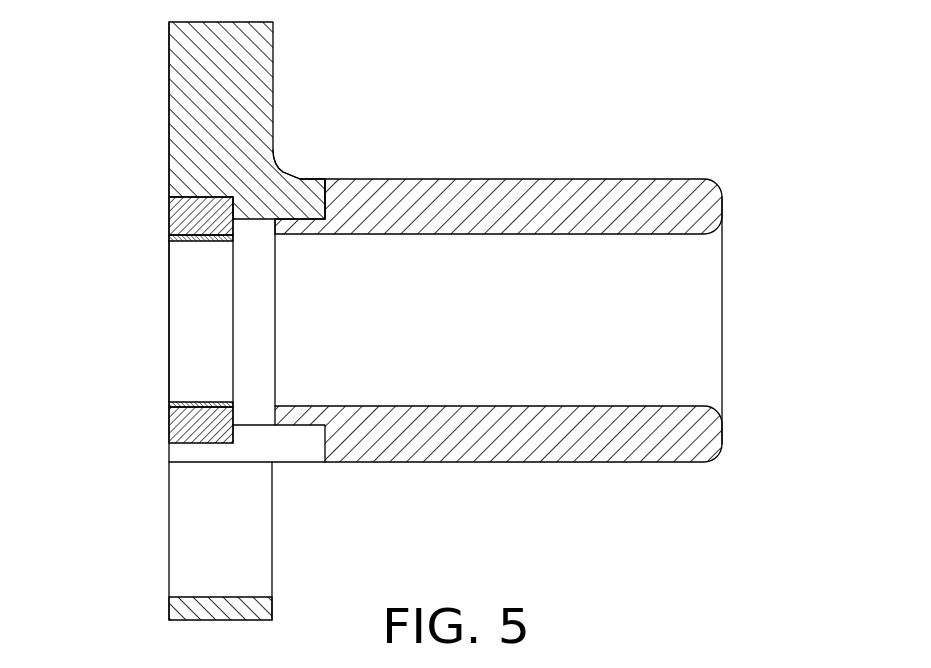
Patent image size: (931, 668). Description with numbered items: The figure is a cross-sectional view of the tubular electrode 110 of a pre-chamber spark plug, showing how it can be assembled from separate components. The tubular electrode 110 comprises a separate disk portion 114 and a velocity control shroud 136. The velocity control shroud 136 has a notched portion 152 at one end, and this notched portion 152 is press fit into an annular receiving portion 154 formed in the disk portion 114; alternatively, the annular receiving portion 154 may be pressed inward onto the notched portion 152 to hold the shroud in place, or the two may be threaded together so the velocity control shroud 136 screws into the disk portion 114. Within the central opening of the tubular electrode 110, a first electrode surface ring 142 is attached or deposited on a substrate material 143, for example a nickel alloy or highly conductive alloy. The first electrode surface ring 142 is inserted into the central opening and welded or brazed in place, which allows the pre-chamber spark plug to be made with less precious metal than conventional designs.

The tubular electrode 110 is at (682, 63).
The disk portion 114 is at (273, 53).
The velocity control shroud 136 is at (603, 178).
The first electrode surface ring 142 is at (180, 283).
The substrate material 143 is at (168, 222).
The notched portion 152 is at (423, 447).
The annular receiving portion 154 is at (300, 178).